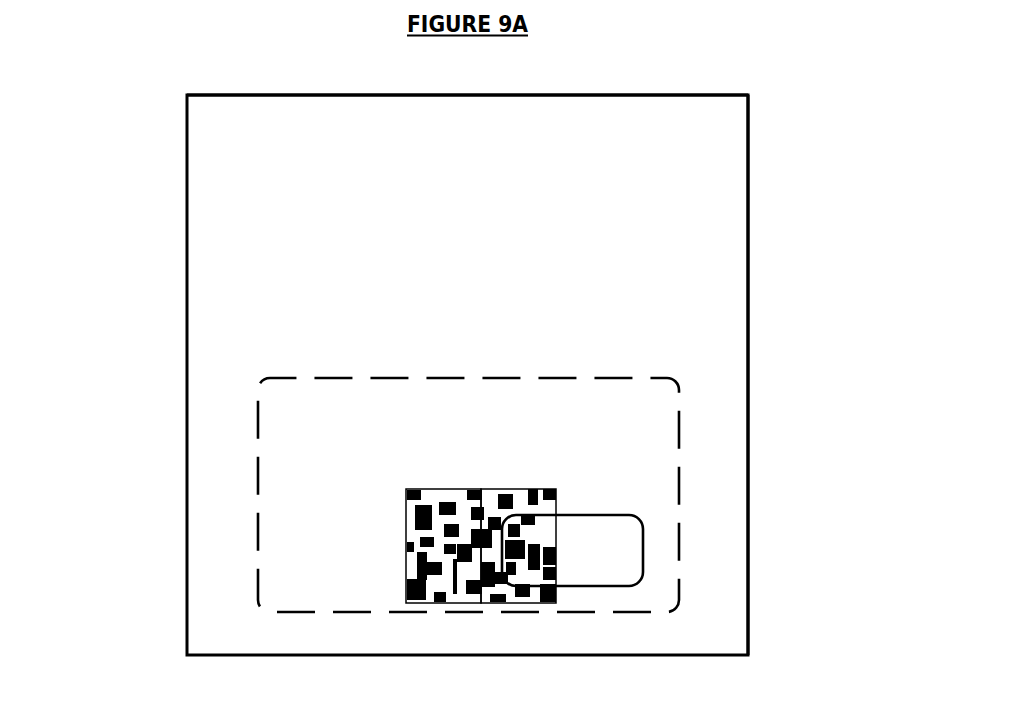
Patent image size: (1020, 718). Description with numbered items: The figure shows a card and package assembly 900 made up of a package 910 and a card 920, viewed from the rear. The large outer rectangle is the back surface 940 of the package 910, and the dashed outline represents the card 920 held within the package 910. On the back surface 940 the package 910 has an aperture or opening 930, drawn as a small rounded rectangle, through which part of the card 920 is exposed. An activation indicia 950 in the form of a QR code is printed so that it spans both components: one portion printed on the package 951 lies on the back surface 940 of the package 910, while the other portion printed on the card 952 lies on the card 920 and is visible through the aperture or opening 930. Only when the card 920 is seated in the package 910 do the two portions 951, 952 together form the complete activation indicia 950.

The card and package assembly 900 is at (401, 375).
The package 910 is at (815, 375).
The card 920 is at (571, 484).
The aperture or opening 930 is at (693, 527).
The back surface 940 is at (260, 140).
The activation indicia 950 is at (467, 513).
The portion printed on the package 951 is at (412, 532).
The portion printed on the card 952 is at (473, 445).